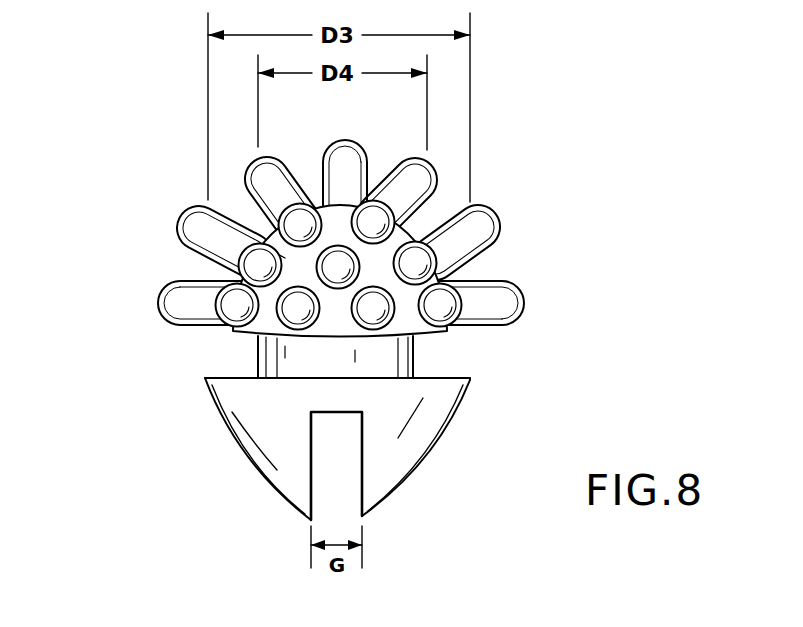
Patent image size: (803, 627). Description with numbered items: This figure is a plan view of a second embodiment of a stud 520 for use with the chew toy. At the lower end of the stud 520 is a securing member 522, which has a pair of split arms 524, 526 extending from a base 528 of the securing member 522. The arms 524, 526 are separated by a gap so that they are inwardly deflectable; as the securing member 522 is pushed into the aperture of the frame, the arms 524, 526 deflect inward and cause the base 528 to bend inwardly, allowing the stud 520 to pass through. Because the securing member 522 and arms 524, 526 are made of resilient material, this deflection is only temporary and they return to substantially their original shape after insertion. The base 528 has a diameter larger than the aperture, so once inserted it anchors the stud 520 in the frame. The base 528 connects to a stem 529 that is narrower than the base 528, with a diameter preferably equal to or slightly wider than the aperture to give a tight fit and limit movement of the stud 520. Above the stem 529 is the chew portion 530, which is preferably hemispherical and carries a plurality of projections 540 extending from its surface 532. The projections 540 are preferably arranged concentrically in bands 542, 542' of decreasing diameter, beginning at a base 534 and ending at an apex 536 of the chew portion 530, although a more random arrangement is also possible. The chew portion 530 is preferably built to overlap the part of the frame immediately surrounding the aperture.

The stud 520 is at (160, 252).
The securing member 522 is at (470, 400).
The split arm 524 is at (397, 455).
The split arm 526 is at (277, 450).
The base 528 is at (293, 392).
The stem 529 is at (416, 343).
The chew portion 530 is at (418, 232).
The surface 532 is at (462, 270).
The base 534 is at (230, 330).
The apex 536 is at (318, 192).
The projections 540 is at (355, 140).
The band 542 is at (278, 237).
The band 542' is at (219, 202).